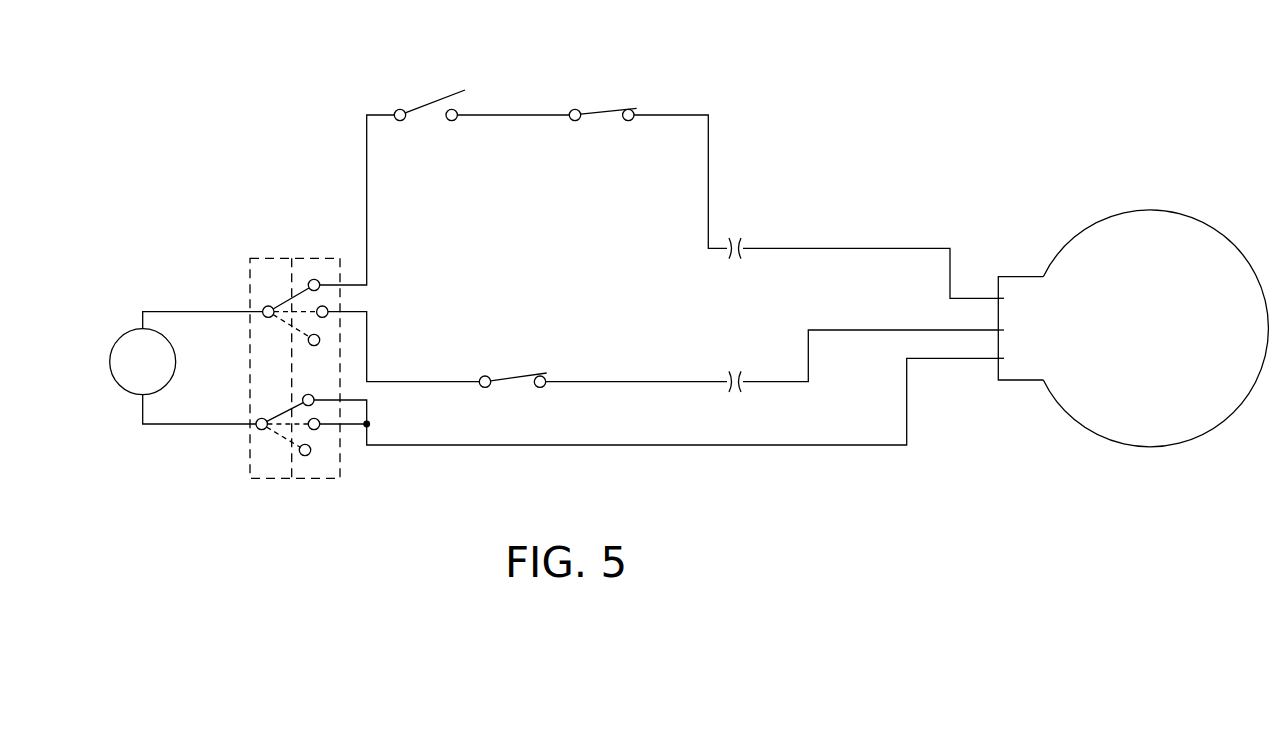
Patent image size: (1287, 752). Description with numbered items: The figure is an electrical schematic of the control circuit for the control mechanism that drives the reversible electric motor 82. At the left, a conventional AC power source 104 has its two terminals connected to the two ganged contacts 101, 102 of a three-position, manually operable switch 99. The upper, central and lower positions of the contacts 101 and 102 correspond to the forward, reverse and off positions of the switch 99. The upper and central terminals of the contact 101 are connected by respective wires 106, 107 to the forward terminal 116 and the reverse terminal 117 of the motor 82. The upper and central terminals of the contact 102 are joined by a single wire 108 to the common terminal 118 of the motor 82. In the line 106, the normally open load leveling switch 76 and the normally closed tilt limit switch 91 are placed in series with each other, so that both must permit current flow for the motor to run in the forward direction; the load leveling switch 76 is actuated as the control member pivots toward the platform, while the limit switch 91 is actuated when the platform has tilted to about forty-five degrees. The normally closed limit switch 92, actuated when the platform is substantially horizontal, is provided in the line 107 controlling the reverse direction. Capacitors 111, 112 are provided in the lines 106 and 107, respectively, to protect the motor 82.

The load leveling switch 76 is at (425, 103).
The reversible electric motor 82 is at (1142, 228).
The limit switch 91 is at (602, 112).
The limit switch 92 is at (510, 380).
The manually operable switch 99 is at (292, 258).
The contact 101 is at (295, 295).
The contact 102 is at (283, 410).
The AC power source 104 is at (135, 380).
The wire 106 is at (708, 137).
The wire 107 is at (665, 380).
The wire 108 is at (658, 445).
The capacitor 111 is at (729, 238).
The capacitor 112 is at (729, 371).
The forward terminal 116 is at (988, 295).
The reverse terminal 117 is at (987, 327).
The common terminal 118 is at (992, 358).